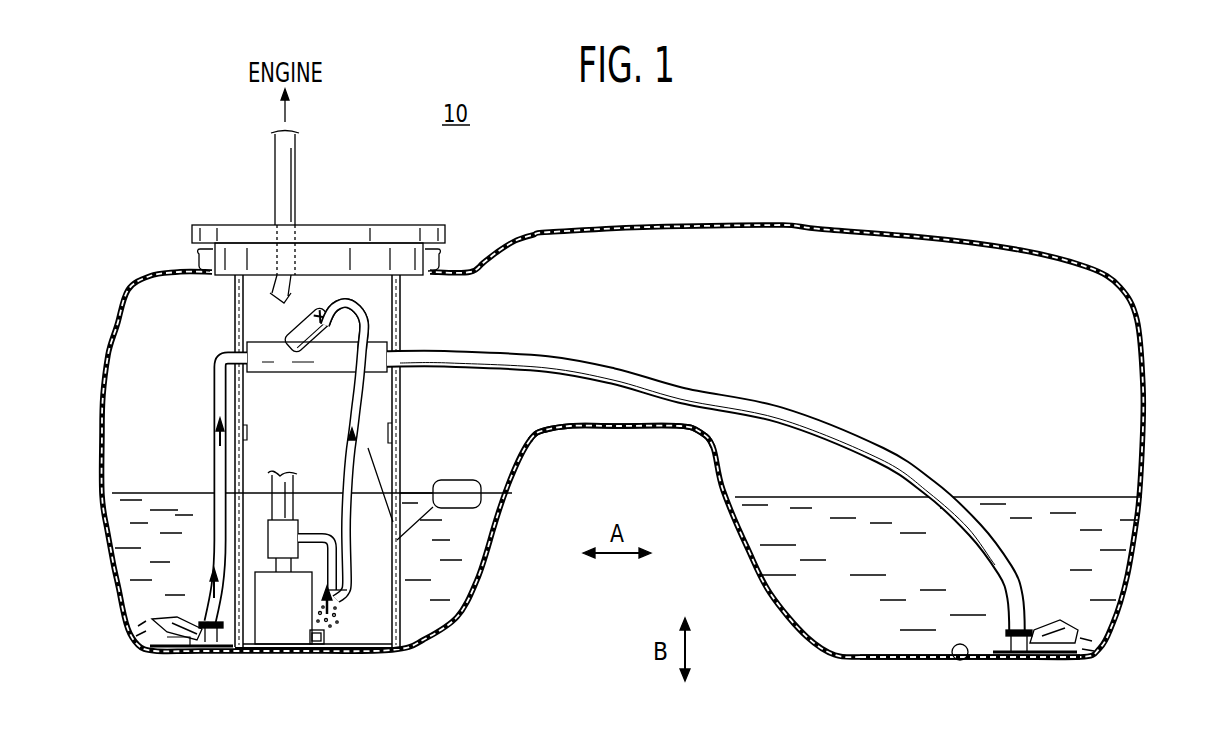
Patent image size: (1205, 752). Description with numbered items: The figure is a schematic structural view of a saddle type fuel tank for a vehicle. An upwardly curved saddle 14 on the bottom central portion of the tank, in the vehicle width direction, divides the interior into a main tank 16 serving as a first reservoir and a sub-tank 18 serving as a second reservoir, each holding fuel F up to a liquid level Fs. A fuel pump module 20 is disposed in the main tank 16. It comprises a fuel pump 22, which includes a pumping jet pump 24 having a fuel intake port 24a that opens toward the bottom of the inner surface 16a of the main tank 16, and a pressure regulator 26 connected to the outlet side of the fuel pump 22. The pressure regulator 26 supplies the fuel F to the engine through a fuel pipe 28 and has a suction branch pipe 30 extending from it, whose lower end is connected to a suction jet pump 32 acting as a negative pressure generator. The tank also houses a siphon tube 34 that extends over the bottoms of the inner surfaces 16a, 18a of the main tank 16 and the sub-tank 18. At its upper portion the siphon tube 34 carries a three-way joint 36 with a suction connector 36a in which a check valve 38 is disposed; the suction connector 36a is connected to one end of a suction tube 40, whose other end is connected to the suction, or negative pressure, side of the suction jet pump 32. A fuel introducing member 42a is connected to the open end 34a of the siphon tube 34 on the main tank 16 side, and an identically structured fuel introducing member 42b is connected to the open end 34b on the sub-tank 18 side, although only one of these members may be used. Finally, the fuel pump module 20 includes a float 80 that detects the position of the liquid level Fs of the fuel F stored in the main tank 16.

The saddle 14 is at (610, 434).
The main tank 16 is at (460, 625).
The inner surface of the main tank 16a is at (191, 653).
The sub-tank 18 is at (855, 660).
The inner surface of the sub-tank 18a is at (966, 660).
The fuel pump module 20 is at (252, 610).
The fuel pump 22 is at (280, 632).
The pumping jet pump 24 is at (314, 648).
The fuel intake port 24a is at (324, 635).
The pressure regulator 26 is at (283, 530).
The fuel pipe 28 is at (283, 478).
The suction branch pipe 30 is at (283, 601).
The suction jet pump 32 is at (337, 601).
The siphon tube 34 is at (735, 384).
The open end of the siphon tube 34a is at (203, 620).
The open end of the siphon tube 34b is at (1007, 628).
The three-way joint 36 is at (328, 363).
The suction connector 36a is at (323, 330).
The check valve 38 is at (301, 314).
The suction tube 40 is at (363, 392).
The fuel introducing member 42a is at (148, 613).
The fuel introducing member 42b is at (1057, 626).
The float 80 is at (452, 480).
The fuel F is at (460, 560).
The liquid level Fs is at (168, 492).